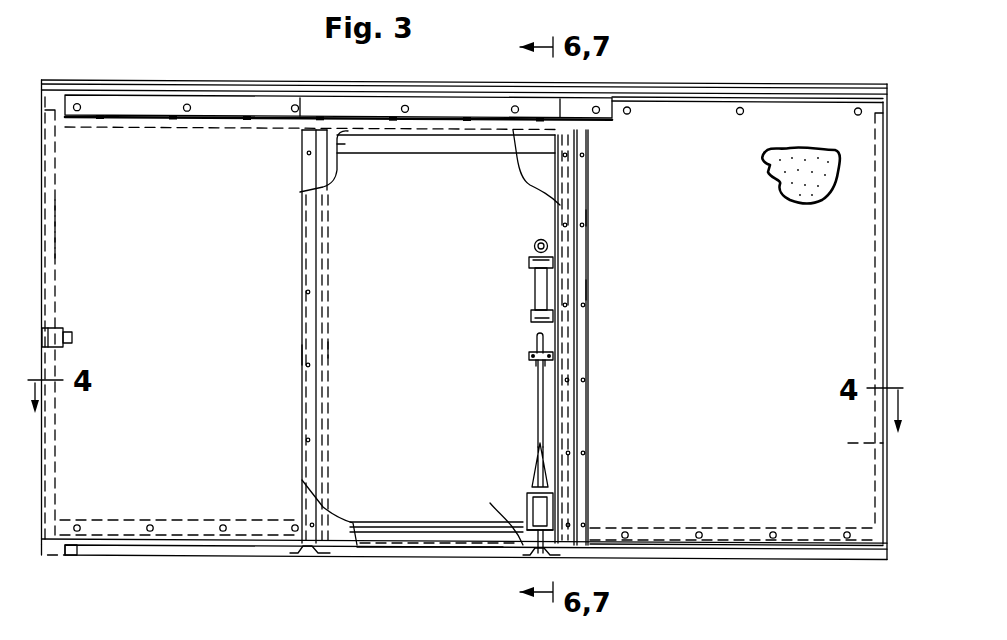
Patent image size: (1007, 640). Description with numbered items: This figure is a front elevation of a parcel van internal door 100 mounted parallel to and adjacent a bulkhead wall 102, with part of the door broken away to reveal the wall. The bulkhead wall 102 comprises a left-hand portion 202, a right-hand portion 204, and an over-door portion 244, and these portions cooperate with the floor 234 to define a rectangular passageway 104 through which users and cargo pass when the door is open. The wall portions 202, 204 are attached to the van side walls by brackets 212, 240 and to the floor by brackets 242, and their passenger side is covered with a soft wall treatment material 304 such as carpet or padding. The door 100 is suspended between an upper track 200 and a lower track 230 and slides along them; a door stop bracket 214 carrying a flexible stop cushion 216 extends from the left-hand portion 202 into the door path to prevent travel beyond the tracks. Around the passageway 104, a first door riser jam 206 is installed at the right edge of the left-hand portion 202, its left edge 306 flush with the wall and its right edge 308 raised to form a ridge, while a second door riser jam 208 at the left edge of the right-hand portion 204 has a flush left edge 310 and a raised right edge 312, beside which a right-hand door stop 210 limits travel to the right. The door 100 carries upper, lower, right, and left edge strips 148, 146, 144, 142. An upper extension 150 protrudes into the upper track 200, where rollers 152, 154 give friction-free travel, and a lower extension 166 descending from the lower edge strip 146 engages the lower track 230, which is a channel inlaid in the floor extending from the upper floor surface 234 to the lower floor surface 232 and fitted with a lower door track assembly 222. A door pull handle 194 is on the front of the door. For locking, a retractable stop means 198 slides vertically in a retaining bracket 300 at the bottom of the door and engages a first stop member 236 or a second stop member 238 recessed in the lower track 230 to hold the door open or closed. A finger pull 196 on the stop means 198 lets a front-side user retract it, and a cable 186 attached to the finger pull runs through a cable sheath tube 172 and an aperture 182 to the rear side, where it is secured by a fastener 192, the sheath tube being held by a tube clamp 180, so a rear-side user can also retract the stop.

The door 100 is at (320, 415).
The bulkhead wall 102 is at (182, 153).
The passageway 104 is at (553, 437).
The left edge strip 142 is at (315, 462).
The right edge strip 144 is at (567, 365).
The lower edge strip 146 is at (355, 522).
The upper edge strip 148 is at (380, 153).
The upper extension 150 is at (450, 128).
The roller 152 is at (563, 127).
The roller 154 is at (305, 108).
The lower extension 166 is at (440, 550).
The cable sheath tube 172 is at (530, 353).
The tube clamp 180 is at (530, 358).
The aperture 182 is at (537, 335).
The cable 186 is at (537, 405).
The fastener 192 is at (528, 251).
The door pull handle 194 is at (532, 288).
The finger pull 196 is at (530, 463).
The stop means 198 is at (527, 488).
The upper track 200 is at (112, 138).
The left-hand portion 202 is at (153, 198).
The right-hand portion 204 is at (722, 259).
The first door riser jam 206 is at (300, 164).
The second door riser jam 208 is at (555, 210).
The right-hand door stop 210 is at (588, 292).
The bracket 212 is at (57, 232).
The door stop bracket 214 is at (78, 321).
The stop cushion 216 is at (78, 338).
The lower door track assembly 222 is at (405, 535).
The lower track 230 is at (375, 553).
The lower floor surface 232 is at (777, 560).
The floor 234 is at (685, 545).
The first stop member 236 is at (305, 557).
The second stop member 238 is at (543, 557).
The bracket 240 is at (848, 443).
The bracket 242 is at (128, 520).
The over-door portion 244 is at (356, 108).
The retaining bracket 300 is at (505, 530).
The wall treatment material 304 is at (777, 198).
The left edge of first jam 306 is at (303, 354).
The right edge of first jam 308 is at (330, 350).
The left edge of second jam 310 is at (555, 238).
The right edge of second jam 312 is at (590, 218).